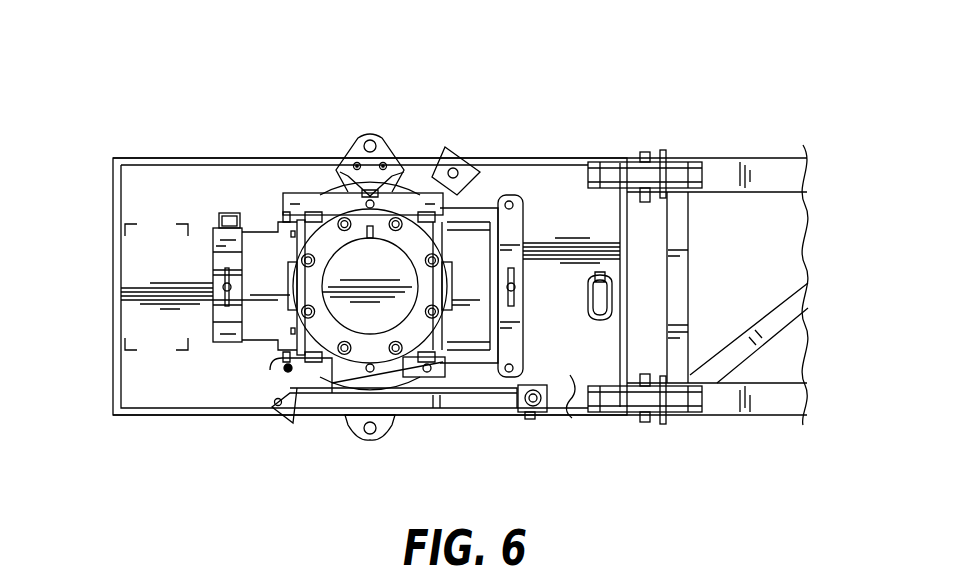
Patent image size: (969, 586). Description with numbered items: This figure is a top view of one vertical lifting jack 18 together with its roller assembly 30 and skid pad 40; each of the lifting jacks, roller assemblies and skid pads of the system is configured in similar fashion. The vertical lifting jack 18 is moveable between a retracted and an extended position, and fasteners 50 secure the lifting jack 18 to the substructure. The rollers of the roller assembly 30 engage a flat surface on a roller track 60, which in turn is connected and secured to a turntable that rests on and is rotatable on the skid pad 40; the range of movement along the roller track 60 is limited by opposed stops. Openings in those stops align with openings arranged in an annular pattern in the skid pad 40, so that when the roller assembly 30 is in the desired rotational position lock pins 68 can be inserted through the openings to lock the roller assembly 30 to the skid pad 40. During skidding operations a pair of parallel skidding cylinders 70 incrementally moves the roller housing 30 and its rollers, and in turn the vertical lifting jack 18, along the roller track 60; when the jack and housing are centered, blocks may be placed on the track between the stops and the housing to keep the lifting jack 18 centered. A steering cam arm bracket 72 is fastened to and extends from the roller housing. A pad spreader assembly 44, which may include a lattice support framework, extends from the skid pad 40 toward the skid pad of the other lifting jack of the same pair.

The roller assembly 30 is at (253, 88).
The skid pad 40 is at (142, 158).
The pad spreader assembly 44 is at (742, 168).
The lock pins 68 is at (230, 290).
The roller track 60 is at (473, 250).
The fasteners 50 is at (397, 353).
The vertical lifting jack 18 is at (387, 260).
The skidding cylinders 70 is at (303, 197).
The steering cam arm bracket 72 is at (305, 375).